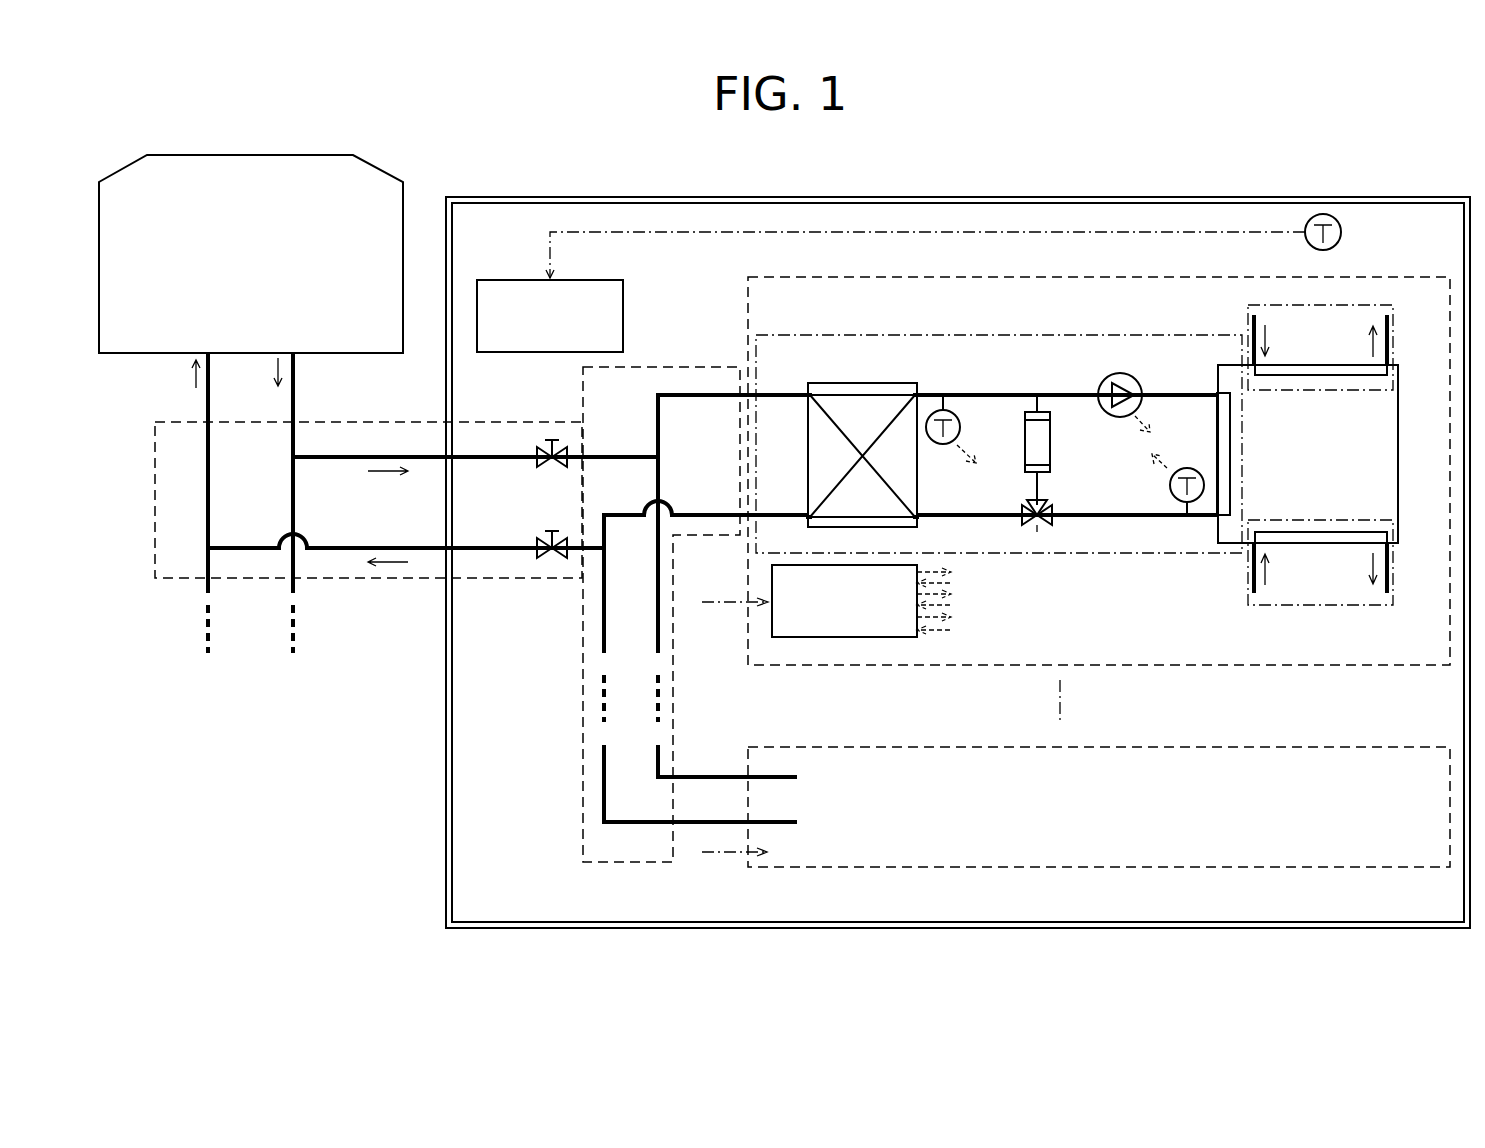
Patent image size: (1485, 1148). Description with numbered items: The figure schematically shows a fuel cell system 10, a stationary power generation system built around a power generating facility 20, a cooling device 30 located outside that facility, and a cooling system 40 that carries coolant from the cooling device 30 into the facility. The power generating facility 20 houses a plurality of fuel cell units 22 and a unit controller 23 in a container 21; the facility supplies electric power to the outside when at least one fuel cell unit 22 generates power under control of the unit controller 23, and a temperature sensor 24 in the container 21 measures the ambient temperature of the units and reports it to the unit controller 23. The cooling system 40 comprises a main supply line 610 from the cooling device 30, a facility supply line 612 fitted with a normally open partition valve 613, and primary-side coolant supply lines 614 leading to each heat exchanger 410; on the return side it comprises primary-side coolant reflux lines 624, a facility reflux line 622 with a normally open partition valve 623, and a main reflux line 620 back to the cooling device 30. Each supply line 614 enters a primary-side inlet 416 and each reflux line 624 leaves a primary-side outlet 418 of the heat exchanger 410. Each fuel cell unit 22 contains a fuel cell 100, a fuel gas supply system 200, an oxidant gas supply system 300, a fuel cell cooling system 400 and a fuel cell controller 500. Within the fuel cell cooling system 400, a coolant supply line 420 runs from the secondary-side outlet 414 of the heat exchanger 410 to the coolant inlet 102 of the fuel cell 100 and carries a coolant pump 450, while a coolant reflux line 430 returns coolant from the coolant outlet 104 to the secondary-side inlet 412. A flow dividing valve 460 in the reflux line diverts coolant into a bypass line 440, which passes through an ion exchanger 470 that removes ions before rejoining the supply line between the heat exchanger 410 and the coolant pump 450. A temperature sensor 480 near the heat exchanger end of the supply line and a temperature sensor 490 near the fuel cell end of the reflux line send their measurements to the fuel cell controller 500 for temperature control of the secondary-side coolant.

The fuel cell system 10 is at (203, 842).
The power generating facility 20 is at (578, 196).
The container 21 is at (1228, 196).
The fuel cell unit 22 is at (1385, 275).
The unit controller 23 is at (595, 279).
The temperature sensor 24 is at (1341, 232).
The cooling device 30 is at (375, 170).
The cooling system 40 is at (392, 584).
The fuel cell 100 is at (1399, 443).
The coolant inlet 102 is at (1216, 393).
The coolant outlet 104 is at (1216, 515).
The fuel gas supply system 200 is at (1394, 350).
The oxidant gas supply system 300 is at (1394, 565).
The fuel cell cooling system 400 is at (843, 334).
The heat exchanger 410 is at (866, 383).
The secondary-side inlet 412 is at (919, 518).
The secondary-side outlet 414 is at (919, 393).
The primary-side inlet 416 is at (806, 393).
The primary-side outlet 418 is at (806, 518).
The coolant supply line 420 is at (1002, 393).
The coolant reflux line 430 is at (960, 513).
The bypass line 440 is at (1040, 488).
The coolant pump 450 is at (1104, 376).
The flow dividing valve 460 is at (1050, 522).
The ion exchanger 470 is at (1050, 446).
The temperature sensor 480 is at (960, 432).
The temperature sensor 490 is at (1187, 467).
The fuel cell controller 500 is at (848, 638).
The main supply line 610 is at (293, 504).
The facility supply line 612 is at (435, 455).
The partition valve 613 is at (537, 452).
The primary-side coolant supply line 614 is at (738, 393).
The main reflux line 620 is at (208, 506).
The facility reflux line 622 is at (435, 546).
The partition valve 623 is at (537, 543).
The primary-side coolant reflux line 624 is at (738, 512).